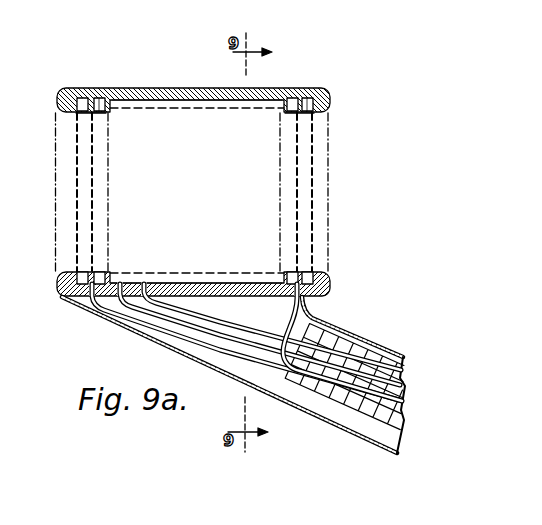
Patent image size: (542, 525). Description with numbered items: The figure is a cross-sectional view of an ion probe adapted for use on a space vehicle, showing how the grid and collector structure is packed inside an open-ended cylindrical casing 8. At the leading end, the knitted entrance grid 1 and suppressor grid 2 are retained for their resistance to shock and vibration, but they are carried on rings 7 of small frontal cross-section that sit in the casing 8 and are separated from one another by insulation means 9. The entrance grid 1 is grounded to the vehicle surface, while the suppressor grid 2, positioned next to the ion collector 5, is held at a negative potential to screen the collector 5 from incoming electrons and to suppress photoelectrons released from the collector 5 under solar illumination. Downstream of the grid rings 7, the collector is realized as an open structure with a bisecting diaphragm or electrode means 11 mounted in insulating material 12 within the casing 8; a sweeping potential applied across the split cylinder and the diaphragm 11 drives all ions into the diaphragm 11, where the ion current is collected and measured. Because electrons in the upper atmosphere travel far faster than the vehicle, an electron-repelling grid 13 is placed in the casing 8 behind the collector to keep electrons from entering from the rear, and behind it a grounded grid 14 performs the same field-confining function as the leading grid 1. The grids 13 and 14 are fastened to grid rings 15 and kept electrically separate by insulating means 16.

The entrance grid 1 is at (77, 212).
The suppressor grid 2 is at (92, 190).
The ion collector 5 is at (108, 236).
The grid rings 7 is at (90, 114).
The cylindrical casing 8 is at (153, 88).
The insulation means 9 is at (99, 97).
The bisecting diaphragm 11 is at (201, 172).
The insulating material 12 is at (190, 96).
The electron-repelling grid 13 is at (282, 190).
The grounded grid 14 is at (313, 189).
The grid rings 15 is at (298, 113).
The insulating means 16 is at (297, 99).